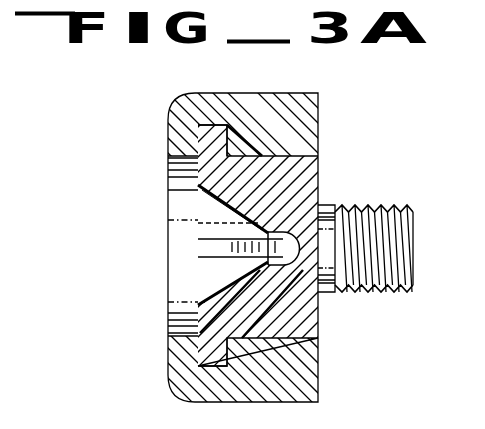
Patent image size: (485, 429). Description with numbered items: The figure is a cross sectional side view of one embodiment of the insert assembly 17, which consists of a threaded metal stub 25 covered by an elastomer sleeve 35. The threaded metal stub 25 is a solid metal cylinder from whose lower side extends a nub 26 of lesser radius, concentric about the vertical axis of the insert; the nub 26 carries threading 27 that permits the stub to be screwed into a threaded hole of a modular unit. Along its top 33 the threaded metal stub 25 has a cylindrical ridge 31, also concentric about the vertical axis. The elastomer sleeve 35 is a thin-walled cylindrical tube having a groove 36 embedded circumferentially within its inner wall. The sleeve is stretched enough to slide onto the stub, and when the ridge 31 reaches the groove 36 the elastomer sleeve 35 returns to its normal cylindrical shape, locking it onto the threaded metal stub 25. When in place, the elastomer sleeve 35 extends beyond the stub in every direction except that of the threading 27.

The insert assembly 17 is at (377, 113).
The threaded metal stub 25 is at (302, 177).
The nub 26 is at (414, 246).
The threading 27 is at (388, 203).
The cylindrical ridge 31 is at (216, 124).
The top 33 is at (193, 144).
The elastomer sleeve 35 is at (308, 371).
The groove 36 is at (208, 368).